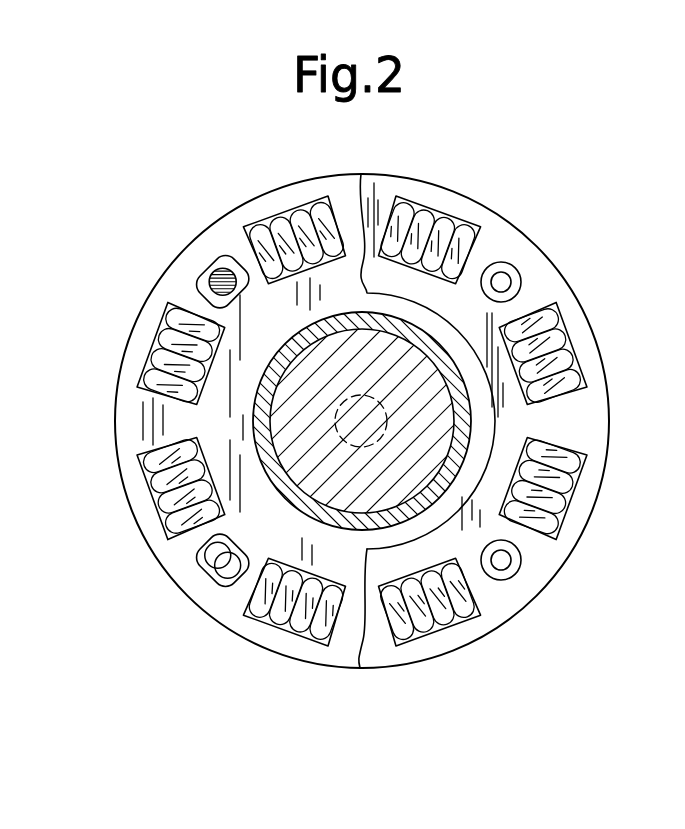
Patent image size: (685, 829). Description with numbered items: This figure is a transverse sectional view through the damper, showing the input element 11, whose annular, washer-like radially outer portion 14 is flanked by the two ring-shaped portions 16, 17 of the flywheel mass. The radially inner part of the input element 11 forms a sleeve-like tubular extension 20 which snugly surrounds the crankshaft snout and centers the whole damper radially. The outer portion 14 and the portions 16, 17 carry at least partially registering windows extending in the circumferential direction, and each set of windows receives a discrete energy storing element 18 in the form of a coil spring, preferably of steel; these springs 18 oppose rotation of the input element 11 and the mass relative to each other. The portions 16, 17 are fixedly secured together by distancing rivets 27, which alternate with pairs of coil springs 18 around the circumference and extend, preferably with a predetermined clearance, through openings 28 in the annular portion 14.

The input element 11 is at (228, 612).
The radially outer portion 14 is at (203, 590).
The ring-shaped portion 16 is at (222, 260).
The ring-shaped portion 17 is at (538, 280).
The energy storing element 18 is at (298, 627).
The tubular extension 20 is at (272, 466).
The rivet 27 is at (201, 270).
The opening 28 is at (230, 257).